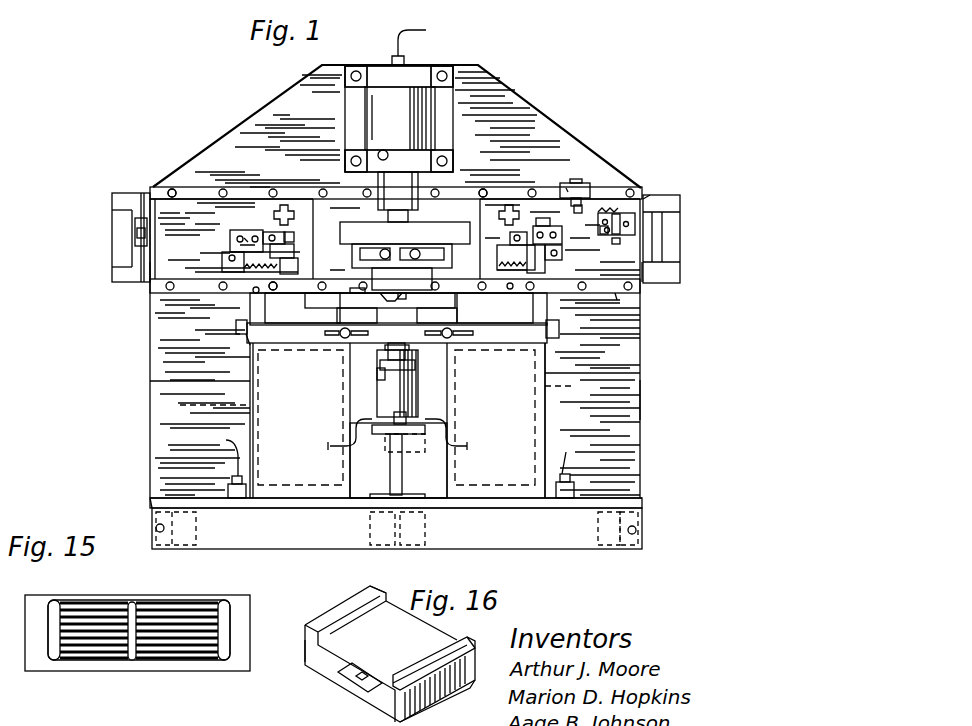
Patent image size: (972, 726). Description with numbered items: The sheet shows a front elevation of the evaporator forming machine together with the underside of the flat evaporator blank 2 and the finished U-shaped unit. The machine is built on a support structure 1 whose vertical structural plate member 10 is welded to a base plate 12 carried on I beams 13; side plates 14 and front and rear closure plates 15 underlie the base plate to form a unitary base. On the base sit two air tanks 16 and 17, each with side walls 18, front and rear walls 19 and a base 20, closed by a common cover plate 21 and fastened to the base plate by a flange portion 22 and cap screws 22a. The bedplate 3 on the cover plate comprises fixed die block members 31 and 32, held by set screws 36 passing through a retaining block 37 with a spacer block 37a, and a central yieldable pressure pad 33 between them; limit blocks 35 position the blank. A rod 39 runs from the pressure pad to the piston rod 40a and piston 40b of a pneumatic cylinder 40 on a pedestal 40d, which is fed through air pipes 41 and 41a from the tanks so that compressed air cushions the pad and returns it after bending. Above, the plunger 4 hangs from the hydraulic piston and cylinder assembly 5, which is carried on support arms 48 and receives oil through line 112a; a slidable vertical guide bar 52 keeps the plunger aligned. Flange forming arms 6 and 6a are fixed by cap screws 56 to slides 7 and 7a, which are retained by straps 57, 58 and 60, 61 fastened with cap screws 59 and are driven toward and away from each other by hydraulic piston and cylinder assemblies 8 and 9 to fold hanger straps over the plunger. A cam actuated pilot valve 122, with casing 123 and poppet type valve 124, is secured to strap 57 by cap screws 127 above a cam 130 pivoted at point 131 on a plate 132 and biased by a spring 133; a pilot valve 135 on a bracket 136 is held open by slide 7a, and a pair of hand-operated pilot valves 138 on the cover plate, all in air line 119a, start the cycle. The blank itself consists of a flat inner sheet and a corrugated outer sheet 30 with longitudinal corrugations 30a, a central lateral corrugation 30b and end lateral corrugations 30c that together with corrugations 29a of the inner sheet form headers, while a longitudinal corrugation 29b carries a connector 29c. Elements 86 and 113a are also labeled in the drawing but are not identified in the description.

In FIG. 1, the support structure 1 is at (647, 400).
In FIG. 1, the evaporator blank 2 is at (468, 298).
In FIG. 15, the evaporator blank 2 is at (56, 585).
In FIG. 1, the bedplate 3 is at (553, 308).
In FIG. 1, the plunger 4 is at (458, 230).
In FIG. 1, the hydraulic piston and cylinder assembly 5 is at (345, 68).
In FIG. 1, the flange forming arm 6 is at (558, 258).
In FIG. 1, the flange forming arm 6a is at (230, 236).
In FIG. 1, the slide 7 is at (642, 282).
In FIG. 1, the slide 7a is at (150, 270).
In FIG. 1, the hydraulic piston and cylinder assembly 8 is at (680, 220).
In FIG. 1, the hydraulic piston and cylinder assembly 9 is at (112, 202).
In FIG. 1, the vertical structural plate member 10 is at (168, 388).
In FIG. 1, the base plate 12 is at (150, 512).
In FIG. 1, the I beams 13 is at (188, 526).
In FIG. 1, the side plates 14 is at (152, 520).
In FIG. 1, the front and rear closure plates 15 is at (236, 546).
In FIG. 1, the air tank 16 is at (548, 428).
In FIG. 1, the air tank 17 is at (250, 380).
In FIG. 1, the side walls 18 is at (380, 396).
In FIG. 1, the front and rear walls 19 is at (298, 440).
In FIG. 1, the base 20 is at (283, 494).
In FIG. 16, the base 20 is at (305, 662).
In FIG. 1, the cover plate 21 is at (300, 345).
In FIG. 1, the flange portion 22 is at (228, 490).
In FIG. 1, the cap screws 22a is at (383, 455).
In FIG. 16, the corrugations 29a is at (372, 610).
In FIG. 16, the longitudinal corrugation 29b is at (372, 692).
In FIG. 16, the connector 29c is at (362, 673).
In FIG. 15, the outer sheet 30 is at (80, 600).
In FIG. 16, the outer sheet 30 is at (305, 648).
In FIG. 1, the longitudinal corrugations 30a is at (522, 290).
In FIG. 15, the longitudinal corrugations 30a is at (104, 602).
In FIG. 16, the longitudinal corrugations 30a is at (447, 695).
In FIG. 15, the lateral corrugation 30b is at (132, 660).
In FIG. 15, the lateral corrugations 30c is at (224, 634).
In FIG. 16, the lateral corrugations 30c is at (305, 630).
In FIG. 1, the fixed die block member 31 is at (302, 308).
In FIG. 1, the fixed die block member 32 is at (495, 308).
In FIG. 1, the central yieldable pressure pad 33 is at (357, 316).
In FIG. 1, the limit blocks 35 is at (269, 288).
In FIG. 1, the set screws 36 is at (236, 328).
In FIG. 1, the retaining block 37 is at (246, 340).
In FIG. 1, the spacer block 37a is at (256, 315).
In FIG. 1, the rod 39 is at (417, 315).
In FIG. 1, the pneumatic cylinder 40 is at (410, 399).
In FIG. 1, the piston rod 40a is at (388, 352).
In FIG. 1, the piston 40b is at (382, 382).
In FIG. 1, the pedestal 40d is at (392, 484).
In FIG. 1, the air pipe 41 is at (330, 450).
In FIG. 1, the air pipe 41a is at (455, 448).
In FIG. 1, the support arms 48 is at (345, 100).
In FIG. 1, the slidable vertical guide bar 52 is at (418, 198).
In FIG. 1, the cap screws 56 is at (245, 240).
In FIG. 1, the retaining strap 57 is at (468, 188).
In FIG. 1, the retaining strap 58 is at (615, 296).
In FIG. 1, the cap screws 59 is at (172, 188).
In FIG. 1, the retaining strap 60 is at (258, 185).
In FIG. 1, the retaining strap 61 is at (200, 293).
In FIG. 1, the latch pin 86 is at (290, 220).
In FIG. 1, the line 112a is at (430, 28).
In FIG. 1, the piston 113a is at (395, 150).
In FIG. 1, the air line 119a is at (465, 333).
In FIG. 1, the cam actuated pilot valve 122 is at (590, 183).
In FIG. 1, the casing 123 is at (578, 208).
In FIG. 1, the poppet type valve 124 is at (606, 232).
In FIG. 1, the cap screws 127 is at (566, 188).
In FIG. 1, the cam 130 is at (645, 198).
In FIG. 1, the pivot point 131 is at (622, 234).
In FIG. 1, the plate 132 is at (618, 240).
In FIG. 1, the spring 133 is at (626, 208).
In FIG. 1, the pilot valve 135 is at (138, 240).
In FIG. 1, the bracket 136 is at (135, 232).
In FIG. 1, the pilot valves 138 is at (342, 340).